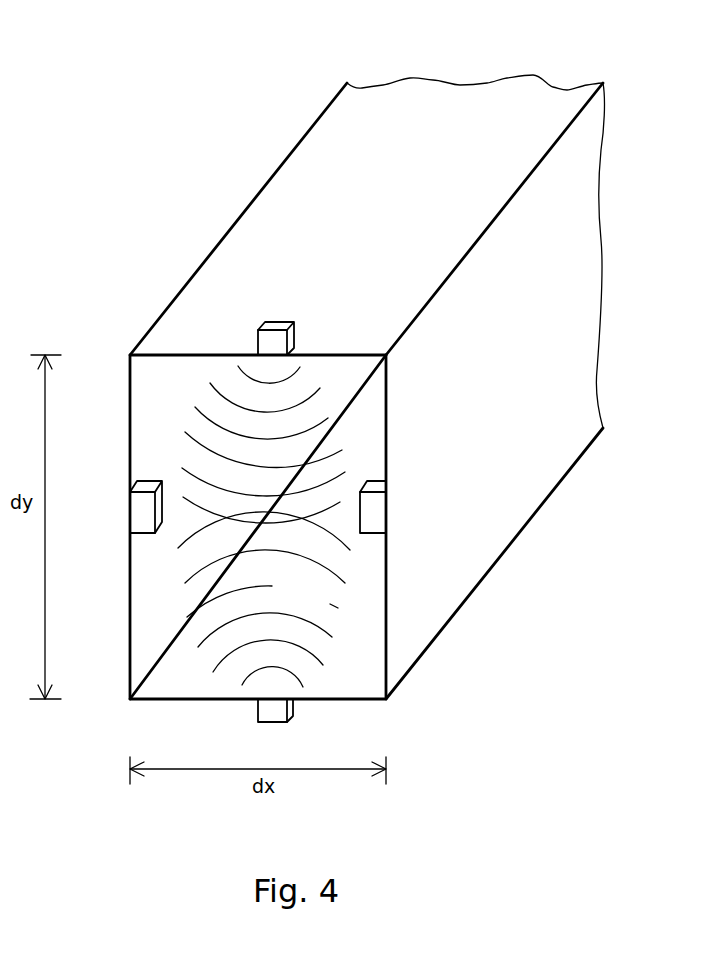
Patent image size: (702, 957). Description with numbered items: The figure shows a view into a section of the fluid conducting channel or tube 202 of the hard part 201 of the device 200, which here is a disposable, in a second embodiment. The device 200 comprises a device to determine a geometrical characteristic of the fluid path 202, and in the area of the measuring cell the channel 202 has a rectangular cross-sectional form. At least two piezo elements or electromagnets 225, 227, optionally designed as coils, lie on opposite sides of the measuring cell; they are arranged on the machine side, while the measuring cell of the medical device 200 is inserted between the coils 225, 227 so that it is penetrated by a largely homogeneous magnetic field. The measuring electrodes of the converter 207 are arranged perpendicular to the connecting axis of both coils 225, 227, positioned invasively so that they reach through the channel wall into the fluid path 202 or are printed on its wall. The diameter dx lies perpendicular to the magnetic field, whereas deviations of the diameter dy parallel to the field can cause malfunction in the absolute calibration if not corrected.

The device 200 is at (186, 106).
The hard part 201 is at (367, 387).
The fluid conducting channel 202 is at (318, 601).
The converter 207 is at (143, 510).
The piezo element or electromagnet 225 is at (258, 343).
The piezo element or electromagnet 227 is at (273, 712).